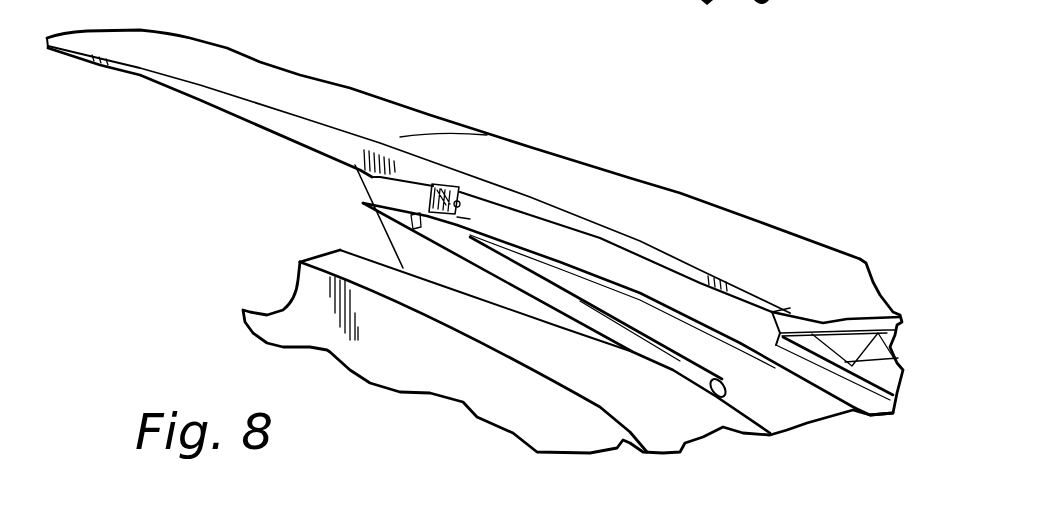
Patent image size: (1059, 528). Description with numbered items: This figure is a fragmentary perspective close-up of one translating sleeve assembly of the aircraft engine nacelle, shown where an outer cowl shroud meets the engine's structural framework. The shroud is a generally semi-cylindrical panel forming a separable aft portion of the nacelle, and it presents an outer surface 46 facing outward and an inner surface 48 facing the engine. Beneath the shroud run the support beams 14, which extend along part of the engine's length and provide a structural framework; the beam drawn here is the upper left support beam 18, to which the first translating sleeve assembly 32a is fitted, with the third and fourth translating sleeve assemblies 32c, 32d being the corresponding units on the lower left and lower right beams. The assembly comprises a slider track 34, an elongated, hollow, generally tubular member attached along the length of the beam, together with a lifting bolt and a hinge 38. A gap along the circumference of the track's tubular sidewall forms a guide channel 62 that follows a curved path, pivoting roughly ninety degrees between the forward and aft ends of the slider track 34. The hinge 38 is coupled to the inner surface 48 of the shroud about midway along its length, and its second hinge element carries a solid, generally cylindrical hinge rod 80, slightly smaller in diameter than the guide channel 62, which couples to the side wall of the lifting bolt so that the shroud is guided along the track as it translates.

The support beams 14 is at (564, 0).
The upper left support beam 18 is at (793, 407).
The first translating sleeve assembly 32a is at (691, 425).
The third translating sleeve assembly 32c is at (446, 0).
The fourth translating sleeve assembly 32d is at (509, 0).
The slider track 34 is at (620, 364).
The hinge 38 is at (486, 196).
The outer surface 46 is at (247, 68).
The inner surface 48 is at (220, 108).
The guide channel 62 is at (680, 371).
The hinge rod 80 is at (457, 217).